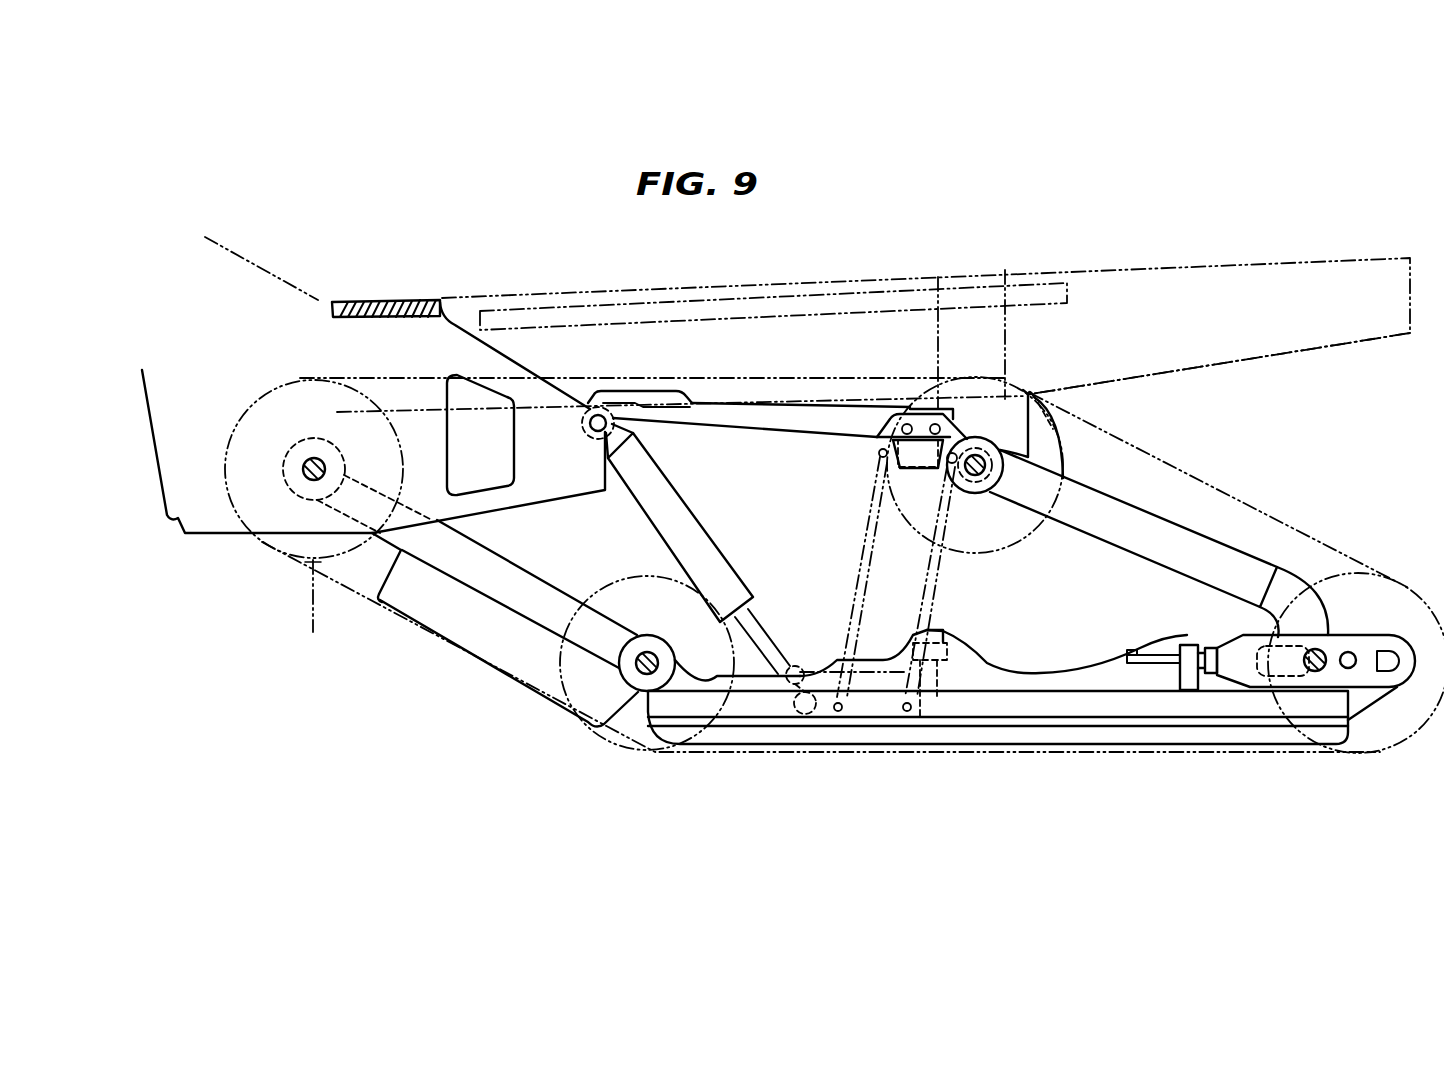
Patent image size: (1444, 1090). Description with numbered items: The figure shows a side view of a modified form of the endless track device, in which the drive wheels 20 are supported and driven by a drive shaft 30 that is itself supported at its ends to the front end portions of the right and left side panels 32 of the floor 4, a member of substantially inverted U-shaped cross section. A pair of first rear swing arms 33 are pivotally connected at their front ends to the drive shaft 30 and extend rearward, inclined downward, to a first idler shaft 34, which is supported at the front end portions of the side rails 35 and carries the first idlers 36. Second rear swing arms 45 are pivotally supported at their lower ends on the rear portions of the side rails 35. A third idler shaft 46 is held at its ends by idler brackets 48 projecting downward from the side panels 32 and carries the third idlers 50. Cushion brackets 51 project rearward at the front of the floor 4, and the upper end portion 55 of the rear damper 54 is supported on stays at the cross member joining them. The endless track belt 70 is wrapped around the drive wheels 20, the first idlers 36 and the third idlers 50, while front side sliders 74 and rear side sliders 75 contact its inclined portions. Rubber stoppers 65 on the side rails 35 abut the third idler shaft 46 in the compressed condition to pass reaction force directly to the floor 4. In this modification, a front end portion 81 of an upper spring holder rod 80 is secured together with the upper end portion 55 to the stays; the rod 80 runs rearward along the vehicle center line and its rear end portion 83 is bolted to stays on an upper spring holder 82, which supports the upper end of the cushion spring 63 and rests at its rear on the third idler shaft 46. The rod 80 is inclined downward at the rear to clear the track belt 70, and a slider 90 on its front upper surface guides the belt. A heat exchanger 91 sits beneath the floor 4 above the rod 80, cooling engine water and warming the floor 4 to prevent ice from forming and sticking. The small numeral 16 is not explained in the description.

The floor 4 is at (1197, 260).
The pin 16 is at (838, 701).
The drive wheels 20 is at (313, 578).
The drive shaft 30 is at (308, 477).
The side panels 32 is at (1320, 349).
The first rear swing arms 33 is at (540, 580).
The first idler shaft 34 is at (644, 670).
The side rails 35 is at (1032, 670).
The first idlers 36 is at (648, 574).
The second rear swing arms 45 is at (1132, 557).
The third idler shaft 46 is at (972, 483).
The idler brackets 48 is at (1062, 432).
The third idlers 50 is at (947, 548).
The cushion brackets 51 is at (510, 497).
The rear damper 54 is at (693, 528).
The upper end portion 55 is at (615, 421).
The cushion spring 63 is at (860, 560).
The rubber stoppers 65 is at (943, 637).
The endless track belt 70 is at (315, 625).
The front side sliders 74 is at (452, 627).
The rear side sliders 75 is at (1030, 707).
The upper spring holder rod 80 is at (833, 417).
The front end portion 81 is at (601, 393).
The upper spring holder 82 is at (903, 463).
The rear end portion 83 is at (912, 405).
The slider 90 is at (634, 403).
The heat exchanger 91 is at (877, 292).